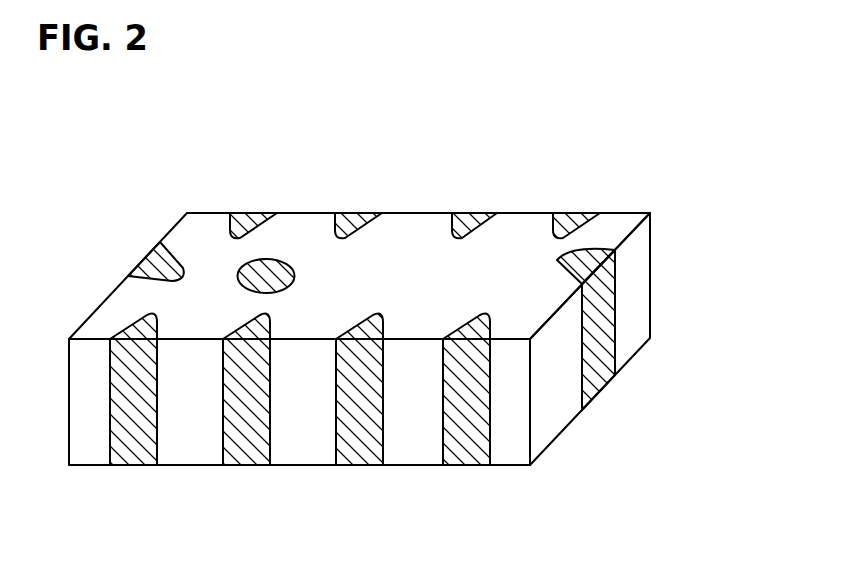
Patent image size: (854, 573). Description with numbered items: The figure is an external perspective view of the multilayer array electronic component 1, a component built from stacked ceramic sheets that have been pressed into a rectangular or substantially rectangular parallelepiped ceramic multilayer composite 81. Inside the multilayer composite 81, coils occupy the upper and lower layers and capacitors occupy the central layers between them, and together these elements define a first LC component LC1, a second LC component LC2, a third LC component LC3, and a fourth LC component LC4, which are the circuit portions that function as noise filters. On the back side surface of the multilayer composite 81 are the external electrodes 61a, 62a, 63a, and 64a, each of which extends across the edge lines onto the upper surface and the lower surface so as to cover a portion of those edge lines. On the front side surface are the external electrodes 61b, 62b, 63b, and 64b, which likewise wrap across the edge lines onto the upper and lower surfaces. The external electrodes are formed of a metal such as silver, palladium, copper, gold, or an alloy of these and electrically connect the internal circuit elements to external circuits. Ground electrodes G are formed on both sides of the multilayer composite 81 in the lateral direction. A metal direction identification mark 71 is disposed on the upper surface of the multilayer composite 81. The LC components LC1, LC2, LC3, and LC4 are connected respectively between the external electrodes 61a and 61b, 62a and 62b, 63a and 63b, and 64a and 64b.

The multilayer array electronic component 1 is at (97, 141).
The external electrode 61a is at (253, 213).
The external electrode 62a is at (352, 213).
The external electrode 63a is at (475, 213).
The external electrode 64a is at (578, 213).
The external electrode 61b is at (128, 452).
The external electrode 62b is at (240, 452).
The external electrode 63b is at (353, 452).
The external electrode 64b is at (462, 452).
The metal direction identification mark 71 is at (263, 262).
The multilayer composite 81 is at (638, 273).
The ground electrode G is at (150, 267).
The first LC component LC1 is at (225, 318).
The second LC component LC2 is at (340, 322).
The third LC component LC3 is at (450, 316).
The fourth LC component LC4 is at (543, 306).